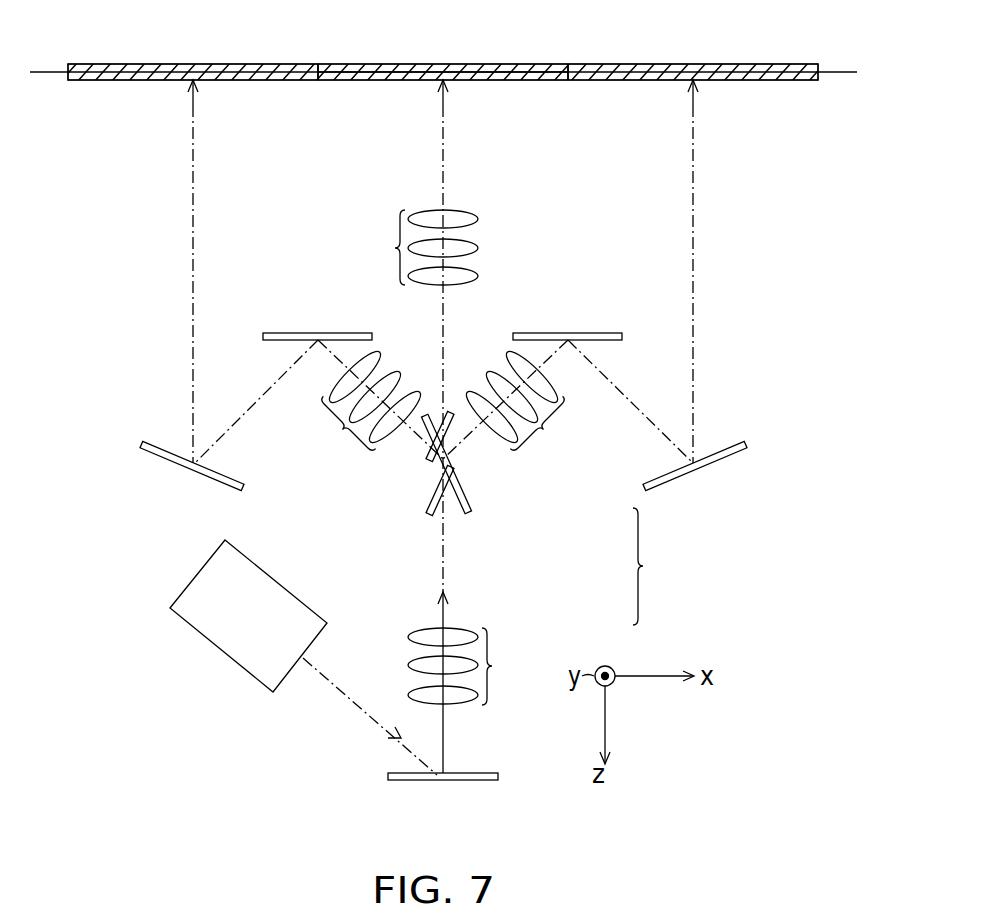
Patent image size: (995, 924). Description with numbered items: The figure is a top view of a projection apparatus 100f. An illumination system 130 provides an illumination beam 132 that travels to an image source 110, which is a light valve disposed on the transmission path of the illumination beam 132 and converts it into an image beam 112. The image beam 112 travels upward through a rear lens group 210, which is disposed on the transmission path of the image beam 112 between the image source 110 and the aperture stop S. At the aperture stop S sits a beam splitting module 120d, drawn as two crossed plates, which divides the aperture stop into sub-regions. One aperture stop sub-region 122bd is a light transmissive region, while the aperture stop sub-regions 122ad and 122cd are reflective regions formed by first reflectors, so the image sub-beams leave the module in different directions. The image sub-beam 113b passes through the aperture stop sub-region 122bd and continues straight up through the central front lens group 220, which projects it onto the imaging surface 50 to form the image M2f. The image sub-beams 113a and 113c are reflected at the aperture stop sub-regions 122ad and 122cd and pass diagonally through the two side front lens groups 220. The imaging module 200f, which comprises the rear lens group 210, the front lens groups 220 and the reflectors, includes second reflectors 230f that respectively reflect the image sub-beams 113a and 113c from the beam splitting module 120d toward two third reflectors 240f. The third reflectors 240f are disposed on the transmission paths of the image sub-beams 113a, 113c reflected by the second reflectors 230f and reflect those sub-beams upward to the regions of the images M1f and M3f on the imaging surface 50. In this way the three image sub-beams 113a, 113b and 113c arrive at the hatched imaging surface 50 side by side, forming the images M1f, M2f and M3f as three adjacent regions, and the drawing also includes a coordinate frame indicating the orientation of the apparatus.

The imaging surface 50 is at (833, 70).
The image M1f is at (121, 62).
The image M2f is at (365, 62).
The image M3f is at (650, 62).
The image sub-beam 113a is at (193, 148).
The image sub-beam 113b is at (444, 150).
The image sub-beam 113c is at (694, 150).
The imaging module 200f is at (316, 238).
The front lens groups 220 is at (443, 336).
The second reflectors 230f is at (262, 337).
The third reflector 240f is at (140, 450).
The aperture stop S is at (452, 391).
The aperture stop sub-region 122ad is at (461, 467).
The aperture stop sub-region 122bd is at (463, 433).
The aperture stop sub-region 122cd is at (461, 503).
The beam splitting module 120d is at (662, 566).
The illumination system 130 is at (218, 653).
The illumination beam 132 is at (350, 700).
The image beam 112 is at (444, 740).
The rear lens group 210 is at (469, 666).
The image source 110 is at (483, 781).
The projection apparatus 100f is at (771, 803).